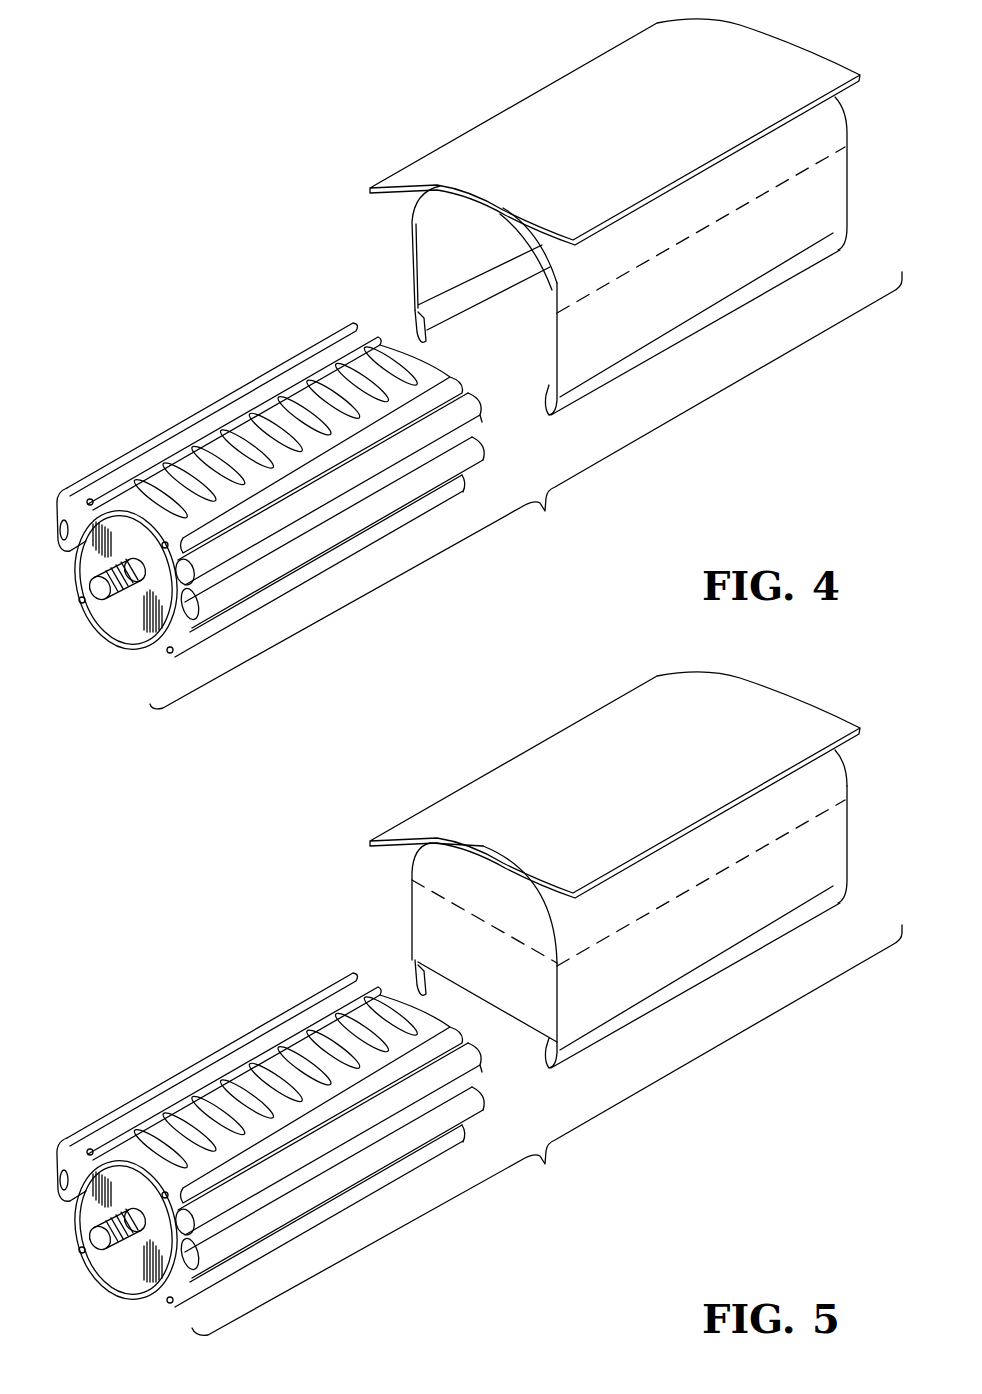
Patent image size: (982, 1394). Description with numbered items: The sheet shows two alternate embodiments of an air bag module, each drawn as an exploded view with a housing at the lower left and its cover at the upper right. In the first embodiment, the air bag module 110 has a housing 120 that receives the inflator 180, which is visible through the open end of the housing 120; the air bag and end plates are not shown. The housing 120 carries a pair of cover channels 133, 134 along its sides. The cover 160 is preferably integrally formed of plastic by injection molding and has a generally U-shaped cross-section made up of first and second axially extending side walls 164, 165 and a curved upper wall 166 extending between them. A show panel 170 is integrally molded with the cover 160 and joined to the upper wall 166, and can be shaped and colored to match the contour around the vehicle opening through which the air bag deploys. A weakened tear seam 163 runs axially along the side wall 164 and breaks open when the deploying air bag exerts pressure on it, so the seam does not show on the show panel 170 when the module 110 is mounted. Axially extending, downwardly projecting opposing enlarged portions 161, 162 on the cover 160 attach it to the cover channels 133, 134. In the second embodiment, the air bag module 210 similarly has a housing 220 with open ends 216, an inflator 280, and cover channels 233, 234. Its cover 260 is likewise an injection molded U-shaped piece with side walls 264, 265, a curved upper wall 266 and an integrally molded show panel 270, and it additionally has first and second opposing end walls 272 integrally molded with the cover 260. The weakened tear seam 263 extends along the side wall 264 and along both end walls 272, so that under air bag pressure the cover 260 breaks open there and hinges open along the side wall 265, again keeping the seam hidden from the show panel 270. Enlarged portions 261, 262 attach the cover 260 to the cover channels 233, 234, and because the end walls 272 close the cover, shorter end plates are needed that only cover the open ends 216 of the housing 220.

In FIG. 4, the air bag module 110 is at (321, 188).
In FIG. 4, the housing 120 is at (210, 392).
In FIG. 4, the cover channel 133 is at (267, 555).
In FIG. 4, the cover channel 134 is at (60, 520).
In FIG. 4, the cover 160 is at (563, 74).
In FIG. 4, the enlarged portion 161 is at (547, 413).
In FIG. 4, the enlarged portion 162 is at (427, 327).
In FIG. 4, the tear seam 163 is at (745, 210).
In FIG. 4, the side wall 164 is at (698, 288).
In FIG. 4, the side wall 165 is at (432, 238).
In FIG. 4, the upper wall 166 is at (540, 240).
In FIG. 4, the show panel 170 is at (433, 172).
In FIG. 4, the inflator 180 is at (126, 628).
In FIG. 5, the air bag module 210 is at (330, 828).
In FIG. 5, the open end 216 is at (158, 1287).
In FIG. 5, the housing 220 is at (247, 1037).
In FIG. 5, the cover channel 233 is at (257, 1213).
In FIG. 5, the cover channel 234 is at (60, 1170).
In FIG. 5, the cover 260 is at (555, 728).
In FIG. 5, the enlarged portion 261 is at (548, 1065).
In FIG. 5, the enlarged portion 262 is at (418, 972).
In FIG. 5, the tear seam 263 is at (490, 926).
In FIG. 5, the side wall 264 is at (838, 828).
In FIG. 5, the side wall 265 is at (413, 912).
In FIG. 5, the upper wall 266 is at (537, 888).
In FIG. 5, the show panel 270 is at (597, 745).
In FIG. 5, the end wall 272 is at (843, 768).
In FIG. 5, the inflator 280 is at (128, 1178).